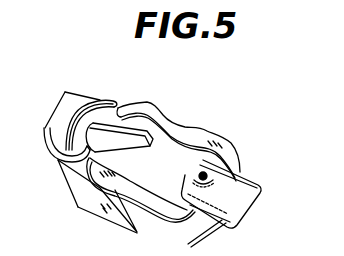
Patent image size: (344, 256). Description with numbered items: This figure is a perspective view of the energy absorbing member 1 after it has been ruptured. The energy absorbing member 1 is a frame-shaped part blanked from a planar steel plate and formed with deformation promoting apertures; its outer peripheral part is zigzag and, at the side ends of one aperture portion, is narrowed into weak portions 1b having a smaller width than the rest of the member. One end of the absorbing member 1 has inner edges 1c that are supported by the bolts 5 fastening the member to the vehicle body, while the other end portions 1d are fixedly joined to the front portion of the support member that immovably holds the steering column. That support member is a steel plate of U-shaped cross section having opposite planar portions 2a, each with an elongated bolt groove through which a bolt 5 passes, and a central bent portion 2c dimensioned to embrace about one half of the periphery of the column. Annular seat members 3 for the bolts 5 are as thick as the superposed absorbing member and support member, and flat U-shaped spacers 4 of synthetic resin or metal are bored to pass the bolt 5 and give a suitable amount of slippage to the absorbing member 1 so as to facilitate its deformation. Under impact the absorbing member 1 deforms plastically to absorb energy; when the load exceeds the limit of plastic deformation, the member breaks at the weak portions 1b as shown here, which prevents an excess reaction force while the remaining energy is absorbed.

The energy absorbing member 1 is at (213, 131).
The weak portions 1b is at (122, 108).
The inner edges 1c is at (232, 172).
The end portions 1d is at (58, 113).
The planar portions 2a is at (88, 123).
The central bent portion 2c is at (98, 208).
The annular seat members 3 is at (59, 112).
The spacers 4 is at (246, 191).
The bolts 5 is at (191, 172).